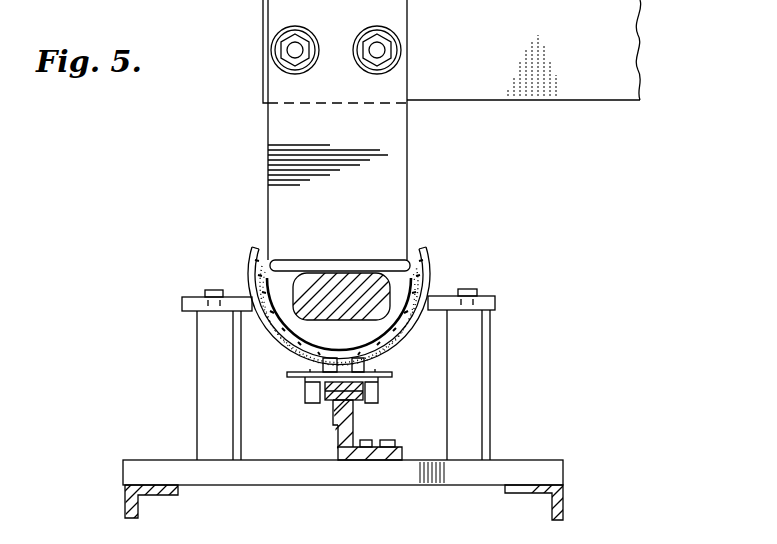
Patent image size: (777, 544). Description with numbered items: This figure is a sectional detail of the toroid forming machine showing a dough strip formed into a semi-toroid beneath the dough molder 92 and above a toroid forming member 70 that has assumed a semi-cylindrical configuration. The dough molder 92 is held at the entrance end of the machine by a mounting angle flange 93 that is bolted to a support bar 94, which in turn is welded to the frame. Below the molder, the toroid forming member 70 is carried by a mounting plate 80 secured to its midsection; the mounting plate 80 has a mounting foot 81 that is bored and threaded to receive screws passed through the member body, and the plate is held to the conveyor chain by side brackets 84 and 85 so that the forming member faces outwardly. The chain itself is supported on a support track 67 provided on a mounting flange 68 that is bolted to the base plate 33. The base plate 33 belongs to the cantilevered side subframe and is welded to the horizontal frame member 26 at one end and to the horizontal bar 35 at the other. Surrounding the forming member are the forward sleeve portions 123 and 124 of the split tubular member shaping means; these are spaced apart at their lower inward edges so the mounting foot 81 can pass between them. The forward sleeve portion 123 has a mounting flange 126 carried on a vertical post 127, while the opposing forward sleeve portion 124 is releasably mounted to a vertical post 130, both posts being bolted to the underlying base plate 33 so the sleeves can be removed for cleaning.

The horizontal frame member 26 is at (565, 500).
The base plate 33 is at (163, 467).
The horizontal bar 35 is at (128, 505).
The support track 67 is at (332, 425).
The mounting flange 68 is at (355, 449).
The toroid forming member 70 is at (405, 252).
The mounting plate 80 is at (386, 368).
The mounting foot 81 is at (323, 365).
The side bracket 84 is at (312, 378).
The side bracket 85 is at (378, 380).
The dough molder 92 is at (341, 258).
The mounting angle flange 93 is at (290, 131).
The support bar 94 is at (597, 65).
The forward sleeve portion 123 is at (428, 312).
The forward sleeve portion 124 is at (262, 322).
The mounting flange 126 is at (497, 296).
The vertical post 127 is at (478, 402).
The vertical post 130 is at (205, 382).